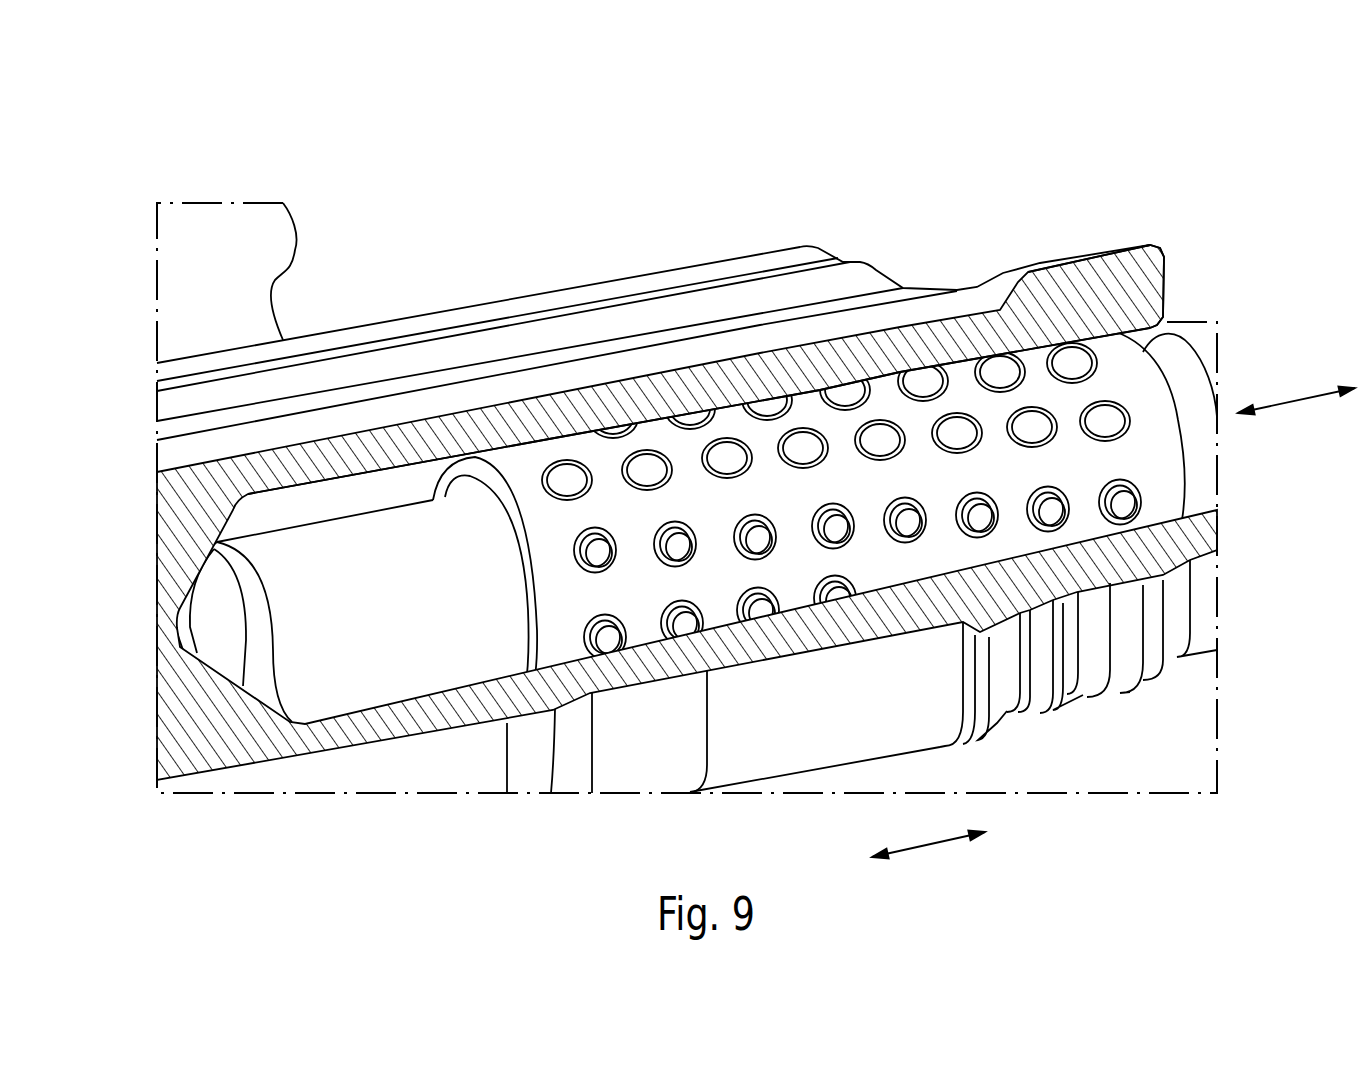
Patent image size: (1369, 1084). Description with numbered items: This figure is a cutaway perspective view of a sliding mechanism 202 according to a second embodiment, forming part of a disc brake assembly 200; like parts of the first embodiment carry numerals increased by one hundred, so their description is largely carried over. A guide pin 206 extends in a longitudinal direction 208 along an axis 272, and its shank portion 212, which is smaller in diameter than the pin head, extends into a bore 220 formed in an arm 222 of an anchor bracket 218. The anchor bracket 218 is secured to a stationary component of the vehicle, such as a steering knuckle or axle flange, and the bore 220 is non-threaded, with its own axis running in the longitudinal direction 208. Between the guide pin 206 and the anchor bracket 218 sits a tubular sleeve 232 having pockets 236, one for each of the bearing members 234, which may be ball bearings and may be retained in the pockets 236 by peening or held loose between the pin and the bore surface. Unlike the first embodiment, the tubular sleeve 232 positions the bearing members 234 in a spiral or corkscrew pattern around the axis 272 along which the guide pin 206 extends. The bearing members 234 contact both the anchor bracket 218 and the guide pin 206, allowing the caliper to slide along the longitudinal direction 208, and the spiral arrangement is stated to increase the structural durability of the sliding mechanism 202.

The disc brake assembly 200 is at (170, 159).
The sliding mechanism 202 is at (956, 308).
The guide pin 206 is at (1175, 377).
The longitudinal direction 208 is at (928, 847).
The shank portion 212 is at (382, 645).
The anchor bracket 218 is at (197, 428).
The bore 220 is at (358, 476).
The arm 222 is at (595, 327).
The tubular sleeve 232 is at (568, 600).
The bearing members 234 is at (730, 460).
The pockets 236 is at (710, 448).
The axis 272 is at (1287, 407).